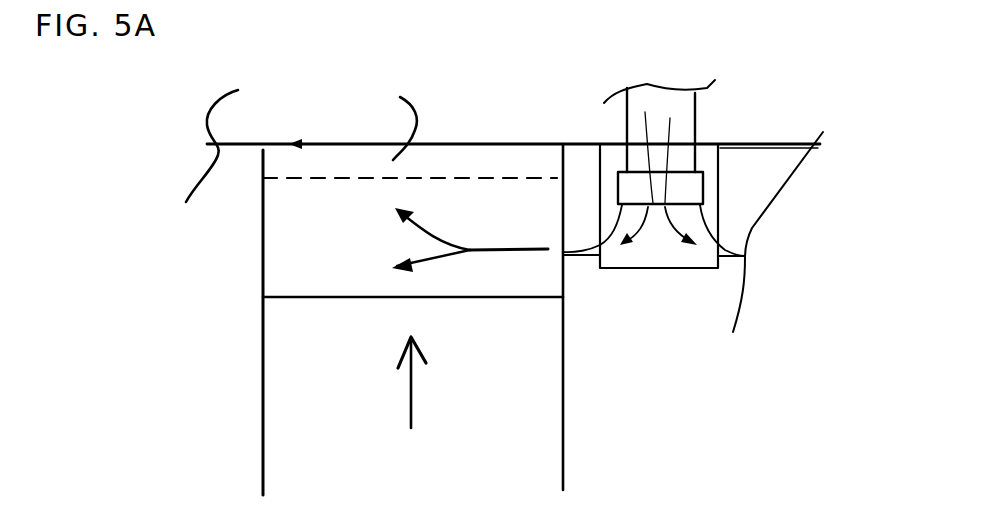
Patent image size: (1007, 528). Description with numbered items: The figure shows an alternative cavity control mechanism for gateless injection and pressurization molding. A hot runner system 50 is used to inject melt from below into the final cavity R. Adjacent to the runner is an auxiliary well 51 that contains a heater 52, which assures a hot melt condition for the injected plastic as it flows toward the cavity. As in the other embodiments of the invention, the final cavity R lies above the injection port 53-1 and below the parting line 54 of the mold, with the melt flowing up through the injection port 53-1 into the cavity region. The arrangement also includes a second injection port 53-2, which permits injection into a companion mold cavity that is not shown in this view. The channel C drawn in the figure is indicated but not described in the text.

The hot runner system 50 is at (584, 121).
The auxiliary well 51 is at (712, 215).
The heater 52 is at (706, 191).
The injection port 53-1 is at (584, 256).
The second injection port 53-2 is at (746, 256).
The parting line 54 is at (516, 143).
The final cavity R is at (394, 121).
The channel C is at (337, 247).